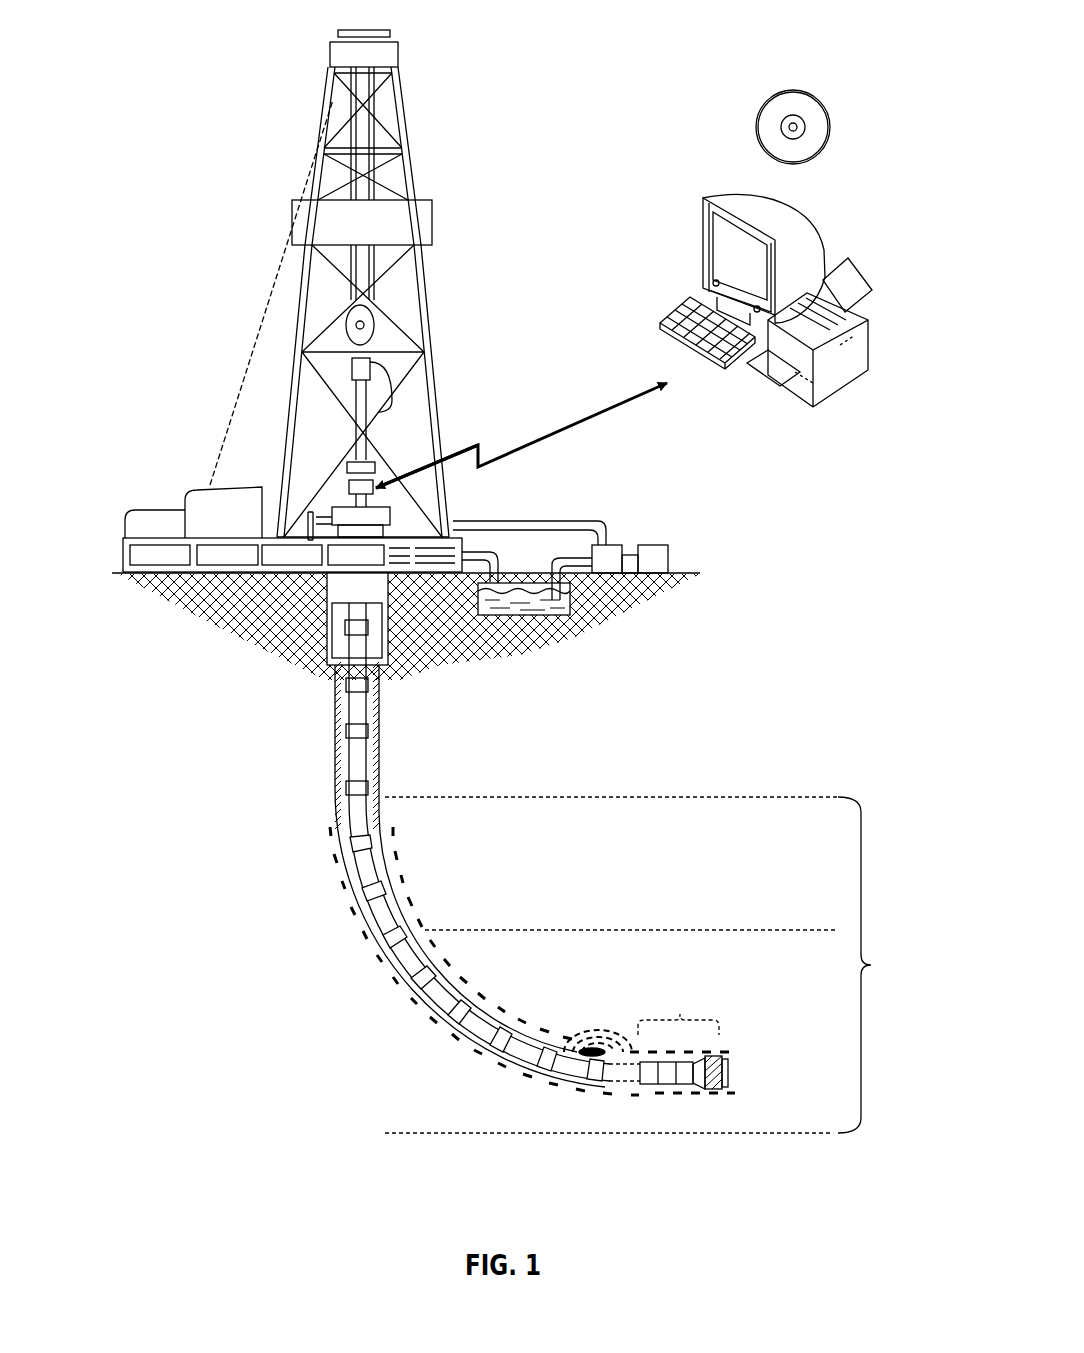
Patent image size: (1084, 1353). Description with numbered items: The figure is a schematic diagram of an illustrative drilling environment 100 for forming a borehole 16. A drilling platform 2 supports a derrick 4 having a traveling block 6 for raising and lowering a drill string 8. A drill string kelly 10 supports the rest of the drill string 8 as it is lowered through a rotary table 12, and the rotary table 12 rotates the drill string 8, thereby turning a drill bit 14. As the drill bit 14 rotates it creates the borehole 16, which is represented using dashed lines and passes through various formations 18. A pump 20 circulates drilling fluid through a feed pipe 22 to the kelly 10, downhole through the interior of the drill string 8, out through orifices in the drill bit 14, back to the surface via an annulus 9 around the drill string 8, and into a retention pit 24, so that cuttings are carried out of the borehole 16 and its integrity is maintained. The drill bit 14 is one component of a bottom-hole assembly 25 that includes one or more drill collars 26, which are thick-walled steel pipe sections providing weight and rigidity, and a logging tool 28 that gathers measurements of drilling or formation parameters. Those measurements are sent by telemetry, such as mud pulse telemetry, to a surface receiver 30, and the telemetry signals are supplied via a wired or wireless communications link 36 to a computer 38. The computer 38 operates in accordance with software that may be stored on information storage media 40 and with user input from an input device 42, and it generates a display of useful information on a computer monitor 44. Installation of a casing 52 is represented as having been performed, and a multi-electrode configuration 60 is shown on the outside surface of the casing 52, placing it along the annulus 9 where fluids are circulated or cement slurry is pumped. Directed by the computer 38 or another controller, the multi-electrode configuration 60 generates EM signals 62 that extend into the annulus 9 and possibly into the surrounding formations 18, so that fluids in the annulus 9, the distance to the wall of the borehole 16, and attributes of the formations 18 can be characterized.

The drilling environment 100 is at (250, 130).
The drilling platform 2 is at (122, 556).
The derrick 4 is at (413, 144).
The traveling block 6 is at (392, 320).
The drill string 8 is at (368, 706).
The annulus 9 is at (340, 752).
The drill string kelly 10 is at (298, 355).
The rotary table 12 is at (335, 505).
The drill bit 14 is at (715, 1091).
The borehole 16 is at (330, 830).
The formations 18 is at (655, 965).
The pump 20 is at (614, 545).
The feed pipe 22 is at (515, 523).
The retention pit 24 is at (505, 592).
The bottom-hole assembly 25 is at (678, 1005).
The drill collars 26 is at (667, 1086).
The logging tool 28 is at (650, 1086).
The surface receiver 30 is at (378, 468).
The communications link 36 is at (625, 400).
The computer 38 is at (757, 272).
The information storage media 40 is at (768, 92).
The input device 42 is at (712, 368).
The computer monitor 44 is at (698, 245).
The casing 52 is at (326, 868).
The multi-electrode configuration 60 is at (583, 1054).
The EM signals 62 is at (578, 1010).